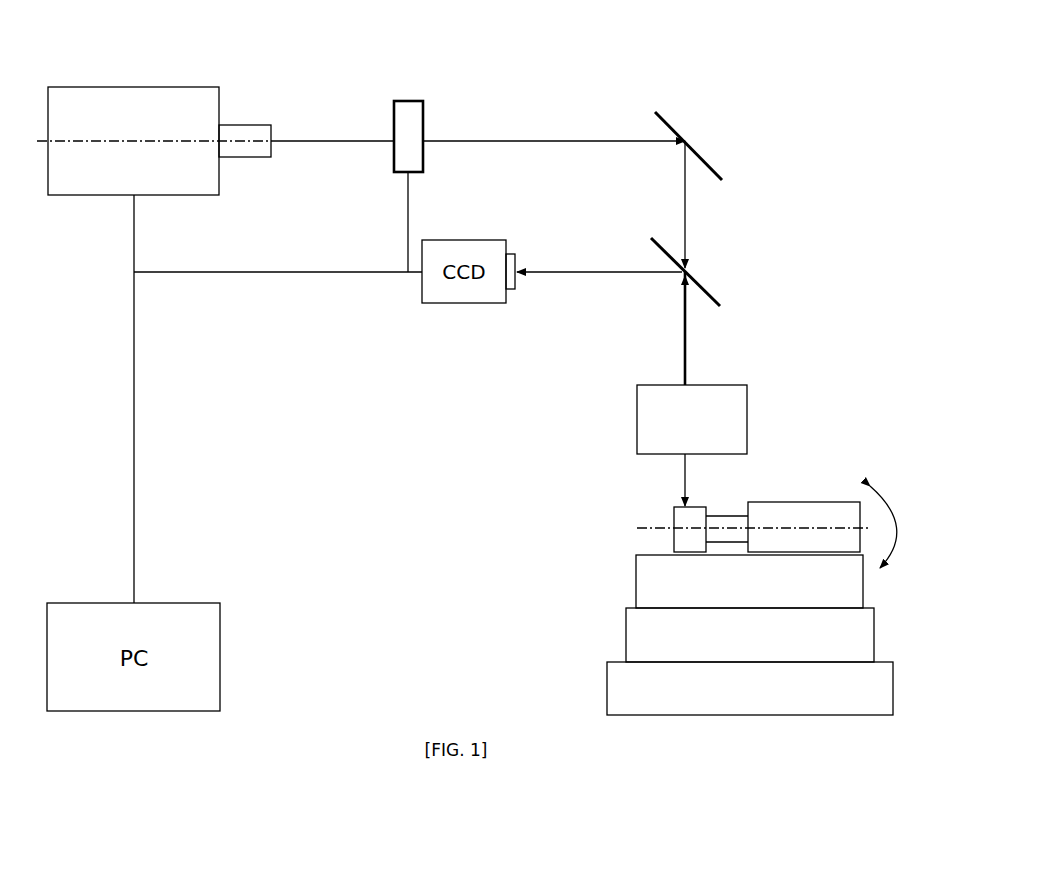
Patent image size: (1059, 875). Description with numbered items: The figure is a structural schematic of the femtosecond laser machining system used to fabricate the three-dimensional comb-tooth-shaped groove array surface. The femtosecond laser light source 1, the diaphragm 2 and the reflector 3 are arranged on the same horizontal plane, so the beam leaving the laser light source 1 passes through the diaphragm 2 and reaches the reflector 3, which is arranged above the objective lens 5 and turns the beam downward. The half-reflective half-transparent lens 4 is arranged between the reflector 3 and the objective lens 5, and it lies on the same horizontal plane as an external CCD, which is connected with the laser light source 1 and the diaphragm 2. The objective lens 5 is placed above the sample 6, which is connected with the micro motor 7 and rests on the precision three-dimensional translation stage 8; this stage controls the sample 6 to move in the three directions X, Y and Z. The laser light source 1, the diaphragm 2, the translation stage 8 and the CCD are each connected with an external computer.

The femtosecond laser light source 1 is at (117, 85).
The diaphragm 2 is at (396, 98).
The reflector 3 is at (706, 160).
The half-reflective half-transparent lens 4 is at (717, 290).
The objective lens 5 is at (737, 383).
The sample 6 is at (706, 507).
The micro motor 7 is at (838, 495).
The precision three-dimensional translation stage 8 is at (874, 632).